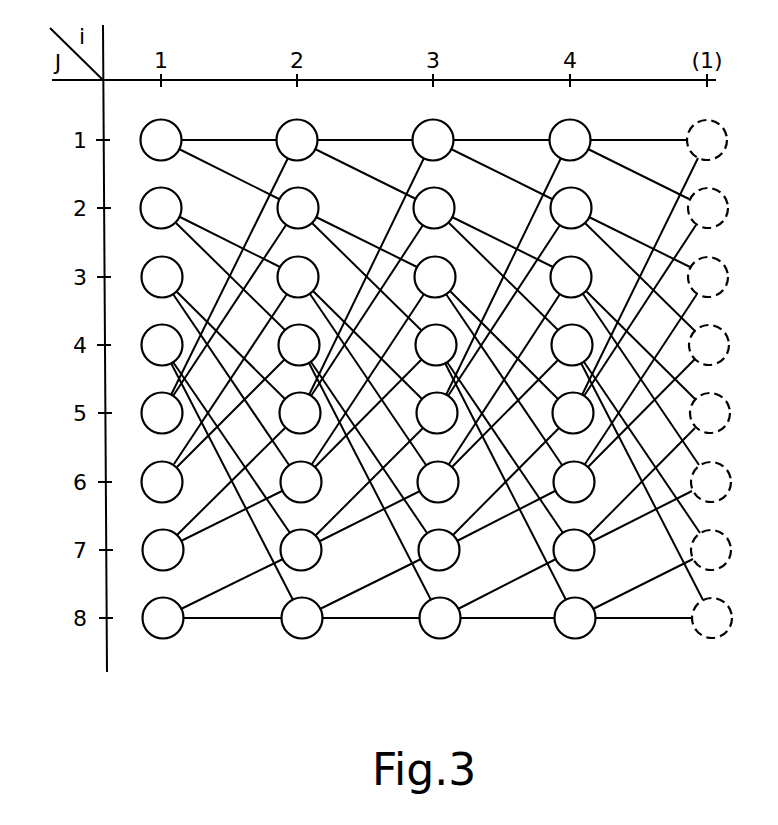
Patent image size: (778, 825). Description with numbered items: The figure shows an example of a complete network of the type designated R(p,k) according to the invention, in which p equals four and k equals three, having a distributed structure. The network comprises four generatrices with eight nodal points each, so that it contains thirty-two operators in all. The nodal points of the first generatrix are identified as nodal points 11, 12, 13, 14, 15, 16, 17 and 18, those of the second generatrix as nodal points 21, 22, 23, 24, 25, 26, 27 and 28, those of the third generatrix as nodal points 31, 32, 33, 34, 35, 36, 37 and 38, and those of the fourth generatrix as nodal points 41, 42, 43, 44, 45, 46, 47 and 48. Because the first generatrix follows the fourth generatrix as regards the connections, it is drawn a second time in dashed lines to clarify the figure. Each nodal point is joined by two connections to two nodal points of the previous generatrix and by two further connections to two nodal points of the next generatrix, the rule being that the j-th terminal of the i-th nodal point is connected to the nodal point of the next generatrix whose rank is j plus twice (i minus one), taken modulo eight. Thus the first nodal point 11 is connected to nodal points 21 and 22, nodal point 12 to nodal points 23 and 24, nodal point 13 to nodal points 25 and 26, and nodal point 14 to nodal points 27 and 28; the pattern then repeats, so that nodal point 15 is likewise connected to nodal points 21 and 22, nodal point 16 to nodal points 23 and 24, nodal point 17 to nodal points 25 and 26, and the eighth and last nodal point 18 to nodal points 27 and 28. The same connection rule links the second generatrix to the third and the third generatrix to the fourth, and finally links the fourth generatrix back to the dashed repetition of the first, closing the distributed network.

The nodal point 11 is at (434, 140).
The nodal point 12 is at (435, 208).
The nodal point 13 is at (435, 277).
The nodal point 14 is at (436, 345).
The nodal point 15 is at (436, 413).
The nodal point 16 is at (437, 482).
The nodal point 17 is at (437, 550).
The nodal point 18 is at (438, 618).
The nodal point 21 is at (297, 140).
The nodal point 22 is at (298, 208).
The nodal point 23 is at (298, 277).
The nodal point 24 is at (299, 345).
The nodal point 25 is at (300, 413).
The nodal point 26 is at (301, 482).
The nodal point 27 is at (301, 550).
The nodal point 28 is at (302, 618).
The nodal point 31 is at (433, 140).
The nodal point 32 is at (434, 208).
The nodal point 33 is at (435, 277).
The nodal point 34 is at (436, 345).
The nodal point 35 is at (437, 413).
The nodal point 36 is at (438, 482).
The nodal point 37 is at (439, 550).
The nodal point 38 is at (440, 618).
The nodal point 41 is at (570, 140).
The nodal point 42 is at (571, 208).
The nodal point 43 is at (571, 277).
The nodal point 44 is at (572, 345).
The nodal point 45 is at (573, 413).
The nodal point 46 is at (574, 482).
The nodal point 47 is at (574, 550).
The nodal point 48 is at (575, 618).